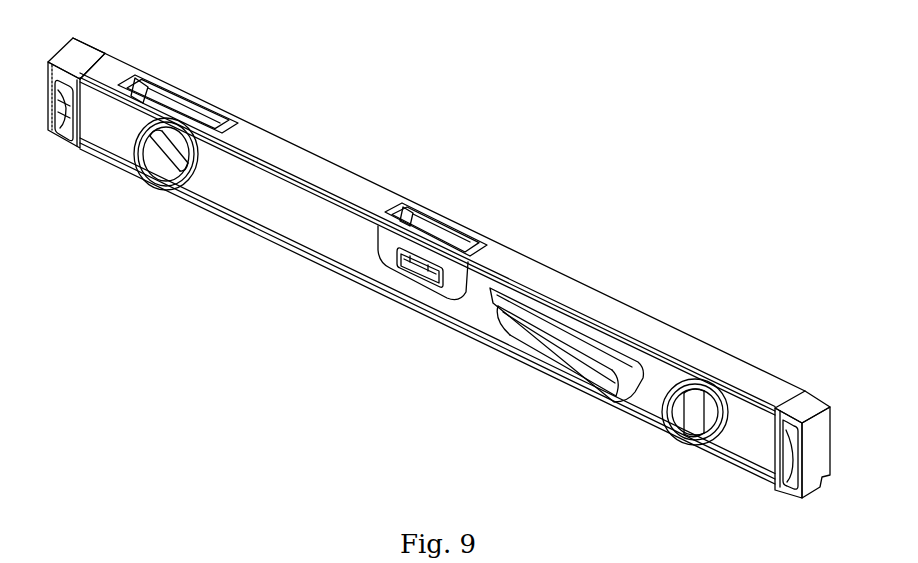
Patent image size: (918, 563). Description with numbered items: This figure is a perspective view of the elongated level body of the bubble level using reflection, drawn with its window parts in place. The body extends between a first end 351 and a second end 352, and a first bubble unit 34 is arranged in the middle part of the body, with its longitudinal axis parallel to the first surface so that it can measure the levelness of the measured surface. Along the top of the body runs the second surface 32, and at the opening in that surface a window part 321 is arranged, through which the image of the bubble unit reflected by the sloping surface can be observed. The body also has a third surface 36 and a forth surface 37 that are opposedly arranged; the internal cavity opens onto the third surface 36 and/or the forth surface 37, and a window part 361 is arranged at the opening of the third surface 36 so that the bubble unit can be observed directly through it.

The second surface 32 is at (288, 162).
The first bubble unit 34 is at (425, 272).
The third surface 36 is at (282, 213).
The forth surface 37 is at (357, 175).
The window part 321 is at (165, 82).
The first end 351 is at (67, 55).
The second end 352 is at (775, 440).
The window part 361 is at (145, 177).